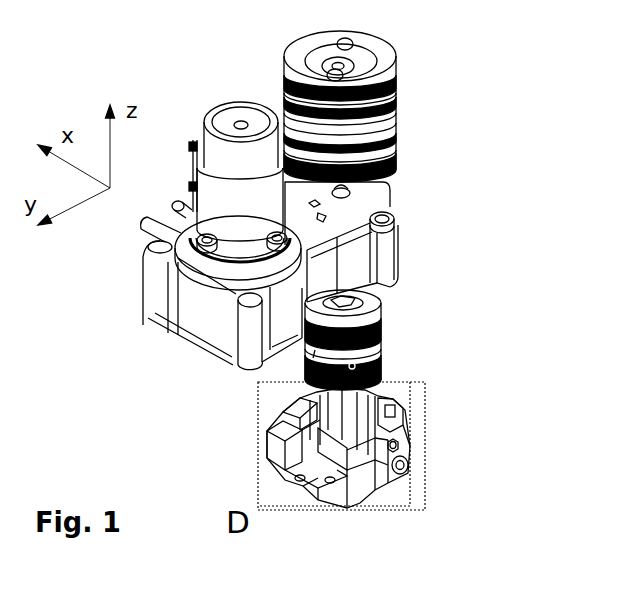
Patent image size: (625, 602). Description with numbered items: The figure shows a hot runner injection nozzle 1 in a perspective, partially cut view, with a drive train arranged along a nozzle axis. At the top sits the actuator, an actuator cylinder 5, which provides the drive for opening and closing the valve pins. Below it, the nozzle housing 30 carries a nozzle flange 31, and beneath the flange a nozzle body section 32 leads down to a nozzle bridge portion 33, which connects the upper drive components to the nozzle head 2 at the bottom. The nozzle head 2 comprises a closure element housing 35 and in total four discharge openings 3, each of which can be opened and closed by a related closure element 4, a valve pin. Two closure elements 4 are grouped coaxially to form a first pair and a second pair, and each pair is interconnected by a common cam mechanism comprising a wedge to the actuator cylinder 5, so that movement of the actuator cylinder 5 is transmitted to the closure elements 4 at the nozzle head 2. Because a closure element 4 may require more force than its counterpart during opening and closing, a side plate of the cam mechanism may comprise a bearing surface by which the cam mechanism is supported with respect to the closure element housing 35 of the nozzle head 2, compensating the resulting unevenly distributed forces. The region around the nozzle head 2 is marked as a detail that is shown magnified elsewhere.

The injection nozzle 1 is at (154, 82).
The nozzle head 2 is at (241, 440).
The discharge opening 3 is at (429, 474).
The closure element (valve pin) 4 is at (410, 506).
The actuator (actuator cylinder) 5 is at (418, 118).
The nozzle housing 30 is at (445, 271).
The nozzle flange 31 is at (422, 232).
The nozzle body section 32 is at (399, 343).
The nozzle bridge portion 33 is at (420, 401).
The closure element housing 35 is at (429, 438).